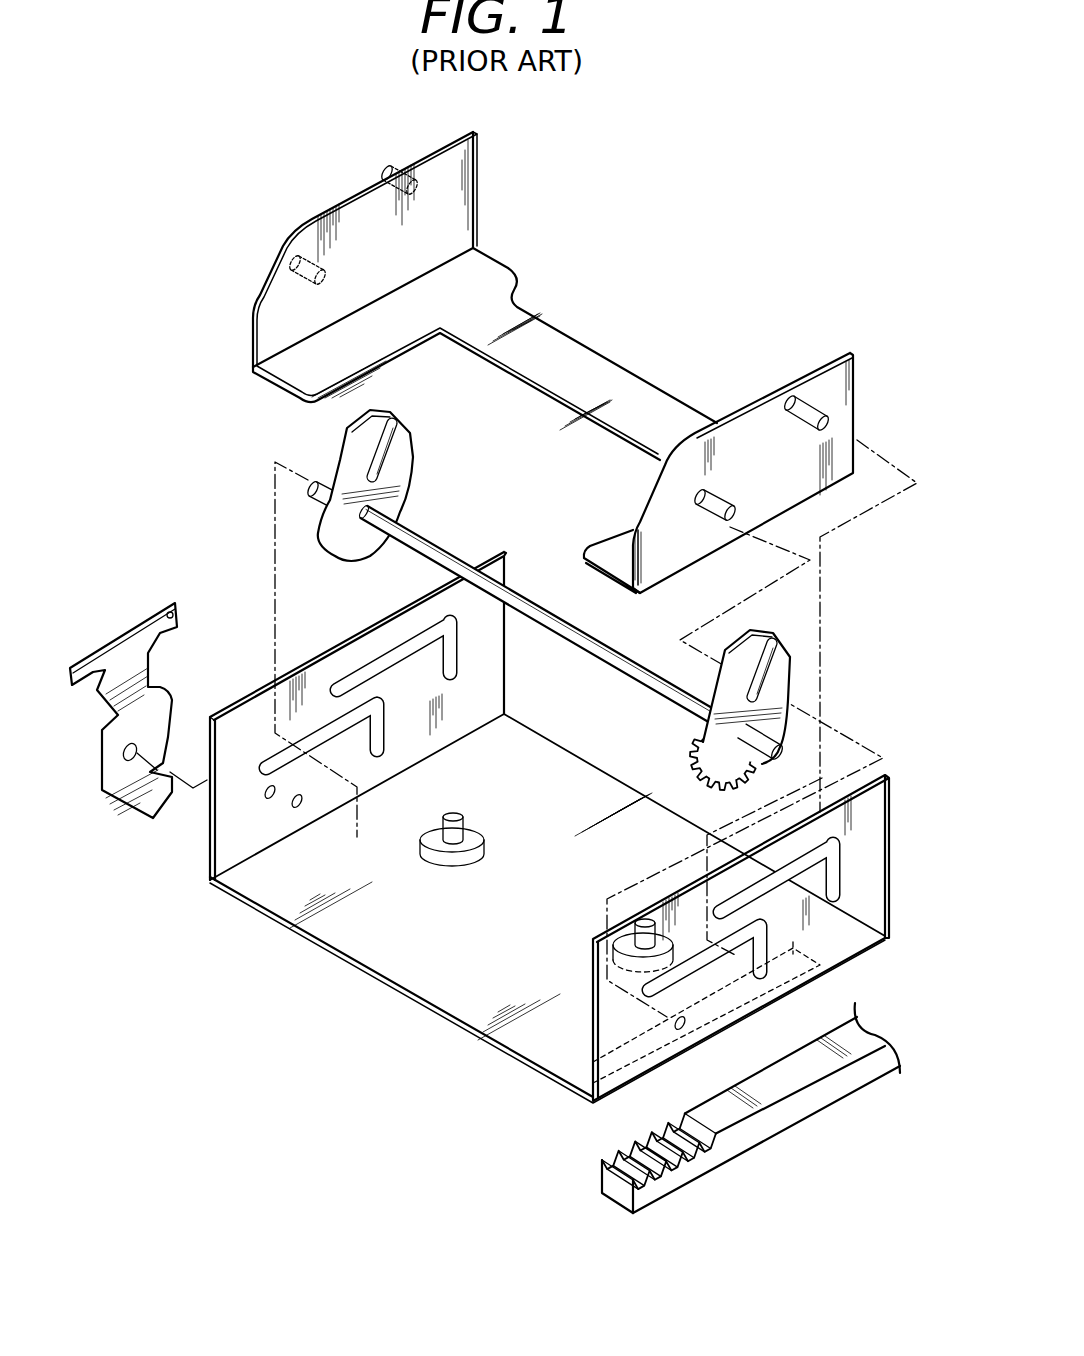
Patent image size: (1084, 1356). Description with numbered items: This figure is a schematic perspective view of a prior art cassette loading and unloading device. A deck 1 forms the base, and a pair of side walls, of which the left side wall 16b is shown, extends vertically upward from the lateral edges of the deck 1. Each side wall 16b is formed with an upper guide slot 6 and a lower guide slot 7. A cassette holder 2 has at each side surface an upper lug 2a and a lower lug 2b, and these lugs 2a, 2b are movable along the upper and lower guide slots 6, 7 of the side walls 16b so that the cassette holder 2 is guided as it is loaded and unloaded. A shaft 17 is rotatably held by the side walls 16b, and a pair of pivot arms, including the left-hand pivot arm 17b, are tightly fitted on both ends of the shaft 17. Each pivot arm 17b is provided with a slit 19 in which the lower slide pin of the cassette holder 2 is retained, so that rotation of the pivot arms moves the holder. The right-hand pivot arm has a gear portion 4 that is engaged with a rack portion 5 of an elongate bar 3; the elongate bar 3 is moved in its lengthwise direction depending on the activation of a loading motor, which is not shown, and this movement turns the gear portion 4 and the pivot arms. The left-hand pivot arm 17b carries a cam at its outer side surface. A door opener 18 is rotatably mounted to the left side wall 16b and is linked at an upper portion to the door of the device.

The deck 1 is at (563, 771).
The cassette holder 2 is at (557, 365).
The upper lug 2a is at (387, 170).
The lower lug 2b is at (294, 262).
The elongate bar 3 is at (751, 1124).
The gear portion 4 is at (687, 752).
The rack portion 5 is at (697, 1150).
The upper guide slot 6 is at (400, 655).
The lower guide slot 7 is at (673, 880).
The side wall 16b is at (549, 826).
The shaft 17 is at (566, 633).
The left-hand pivot arm 17b is at (388, 453).
The door opener 18 is at (137, 798).
The slit 19 is at (364, 453).